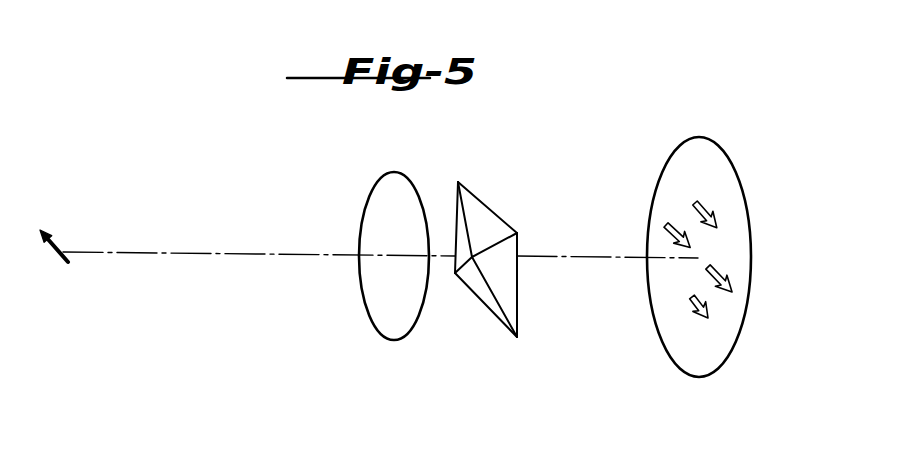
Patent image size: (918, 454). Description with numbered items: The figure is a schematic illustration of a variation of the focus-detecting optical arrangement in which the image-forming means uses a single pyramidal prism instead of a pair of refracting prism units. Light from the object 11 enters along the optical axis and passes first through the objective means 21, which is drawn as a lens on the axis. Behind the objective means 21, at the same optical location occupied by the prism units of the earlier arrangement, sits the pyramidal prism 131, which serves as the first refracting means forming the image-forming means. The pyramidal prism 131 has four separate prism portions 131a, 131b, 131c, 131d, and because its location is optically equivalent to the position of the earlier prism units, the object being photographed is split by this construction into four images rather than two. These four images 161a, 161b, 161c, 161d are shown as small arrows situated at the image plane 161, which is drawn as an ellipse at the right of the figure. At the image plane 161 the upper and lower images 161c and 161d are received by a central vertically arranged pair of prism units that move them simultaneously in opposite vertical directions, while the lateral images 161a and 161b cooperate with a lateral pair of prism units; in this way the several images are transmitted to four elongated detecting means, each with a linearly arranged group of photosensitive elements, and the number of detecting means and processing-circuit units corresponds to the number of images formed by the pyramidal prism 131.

The incident light beam 11 is at (57, 249).
The objective means 21 is at (367, 298).
The pyramidal prism 131 is at (492, 245).
The prism portion 131a is at (513, 294).
The prism portion 131b is at (457, 227).
The prism portion 131c is at (474, 297).
The prism portion 131d is at (495, 210).
The image plane 161 is at (704, 238).
The image 161a is at (668, 229).
The image 161b is at (730, 280).
The image 161c is at (712, 212).
The image 161d is at (693, 308).